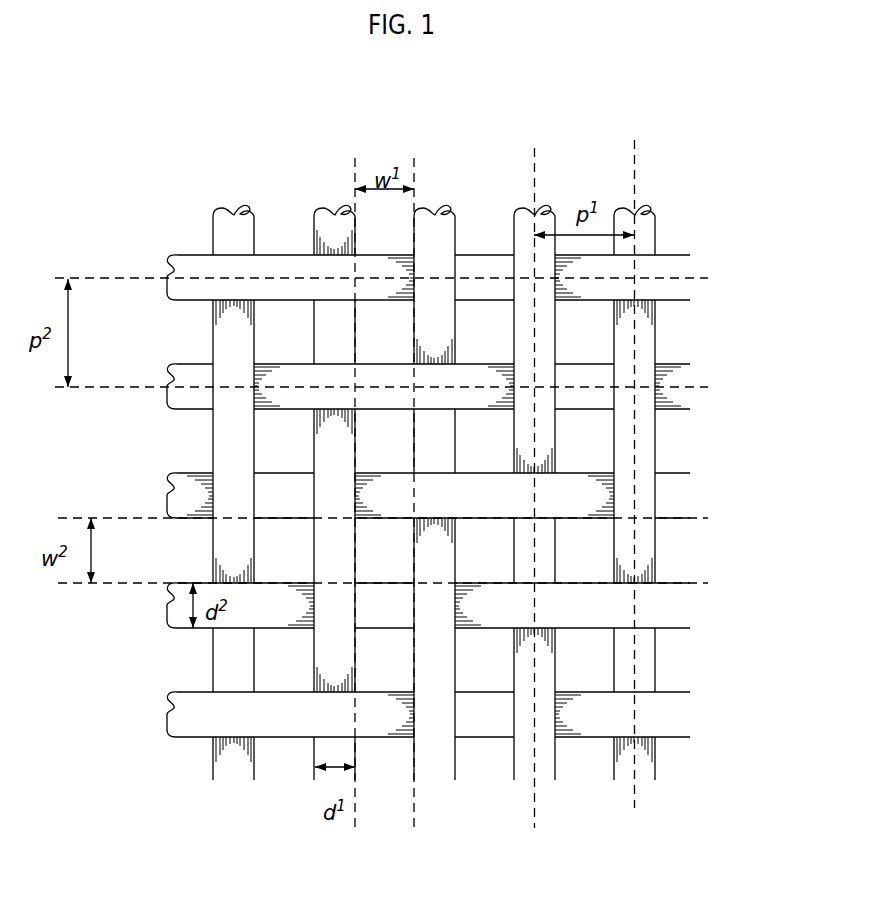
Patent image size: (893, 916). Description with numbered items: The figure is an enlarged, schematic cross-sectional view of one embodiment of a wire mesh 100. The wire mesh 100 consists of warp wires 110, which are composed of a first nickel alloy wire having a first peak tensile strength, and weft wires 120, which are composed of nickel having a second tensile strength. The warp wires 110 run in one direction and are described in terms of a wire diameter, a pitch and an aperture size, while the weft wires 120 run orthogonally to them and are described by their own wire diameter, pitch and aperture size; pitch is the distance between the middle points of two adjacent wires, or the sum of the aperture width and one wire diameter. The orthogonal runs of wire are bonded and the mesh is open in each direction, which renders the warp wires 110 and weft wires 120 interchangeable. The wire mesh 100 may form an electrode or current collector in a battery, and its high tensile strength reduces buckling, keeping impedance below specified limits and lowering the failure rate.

The wire mesh 100 is at (481, 481).
The warp wires 110 is at (311, 221).
The weft wires 120 is at (683, 607).